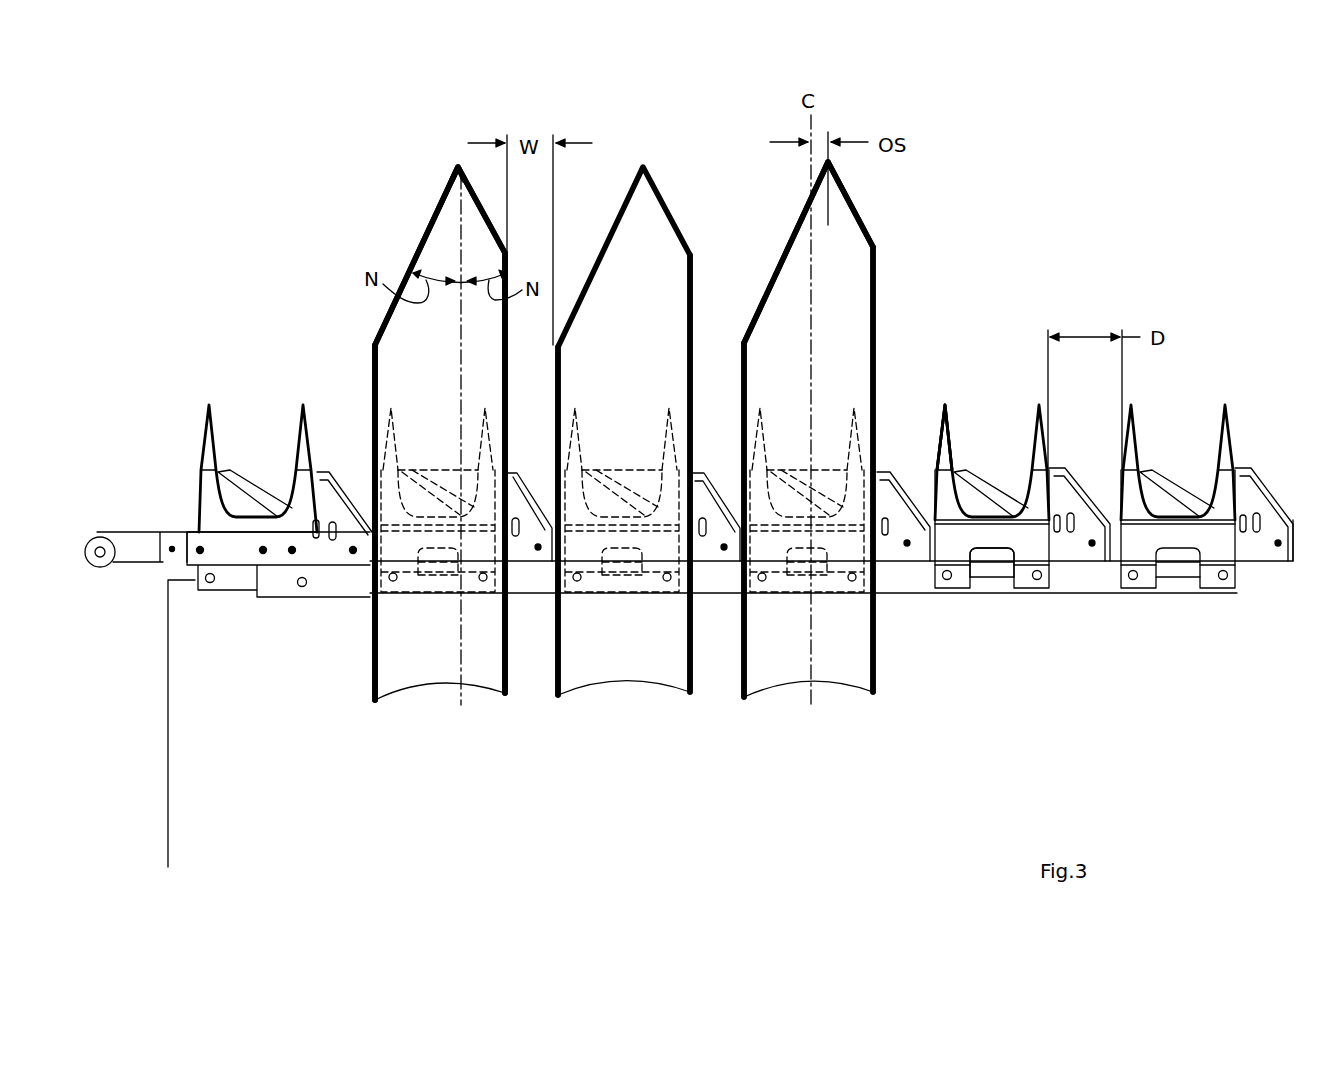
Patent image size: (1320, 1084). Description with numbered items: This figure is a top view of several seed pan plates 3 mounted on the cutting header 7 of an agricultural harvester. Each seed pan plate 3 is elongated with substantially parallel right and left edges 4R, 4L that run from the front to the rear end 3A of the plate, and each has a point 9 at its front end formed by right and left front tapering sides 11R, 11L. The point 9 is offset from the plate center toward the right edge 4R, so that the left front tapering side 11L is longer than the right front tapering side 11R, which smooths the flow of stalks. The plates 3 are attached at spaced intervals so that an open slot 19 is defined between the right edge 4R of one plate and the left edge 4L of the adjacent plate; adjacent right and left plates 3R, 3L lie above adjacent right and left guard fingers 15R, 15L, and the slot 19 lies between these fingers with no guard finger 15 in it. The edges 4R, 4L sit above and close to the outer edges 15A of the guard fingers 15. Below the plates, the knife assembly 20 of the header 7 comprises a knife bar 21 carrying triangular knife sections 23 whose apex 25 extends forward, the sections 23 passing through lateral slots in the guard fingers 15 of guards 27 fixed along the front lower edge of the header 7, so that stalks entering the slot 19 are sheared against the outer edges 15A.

The seed pan plate 3 is at (370, 362).
The left plate 3L is at (440, 686).
The right plate 3R is at (625, 683).
The rear end of the seed pan plate 3A is at (790, 685).
The left edge 4L is at (745, 358).
The right edge 4R is at (876, 302).
The cutting header 7 is at (195, 675).
The point 9 is at (457, 162).
The left front tapering side 11L is at (800, 207).
The right front tapering side 11R is at (860, 210).
The guard finger 15 is at (947, 410).
The left guard finger 15L is at (393, 412).
The right guard finger 15R is at (486, 412).
The outer edge of the guard finger 15A is at (860, 432).
The open slot 19 is at (532, 668).
The knife assembly 20 is at (1253, 448).
The knife bar 21 is at (123, 532).
The knife section 23 is at (263, 490).
The apex 25 is at (1147, 467).
The guard 27 is at (1058, 562).